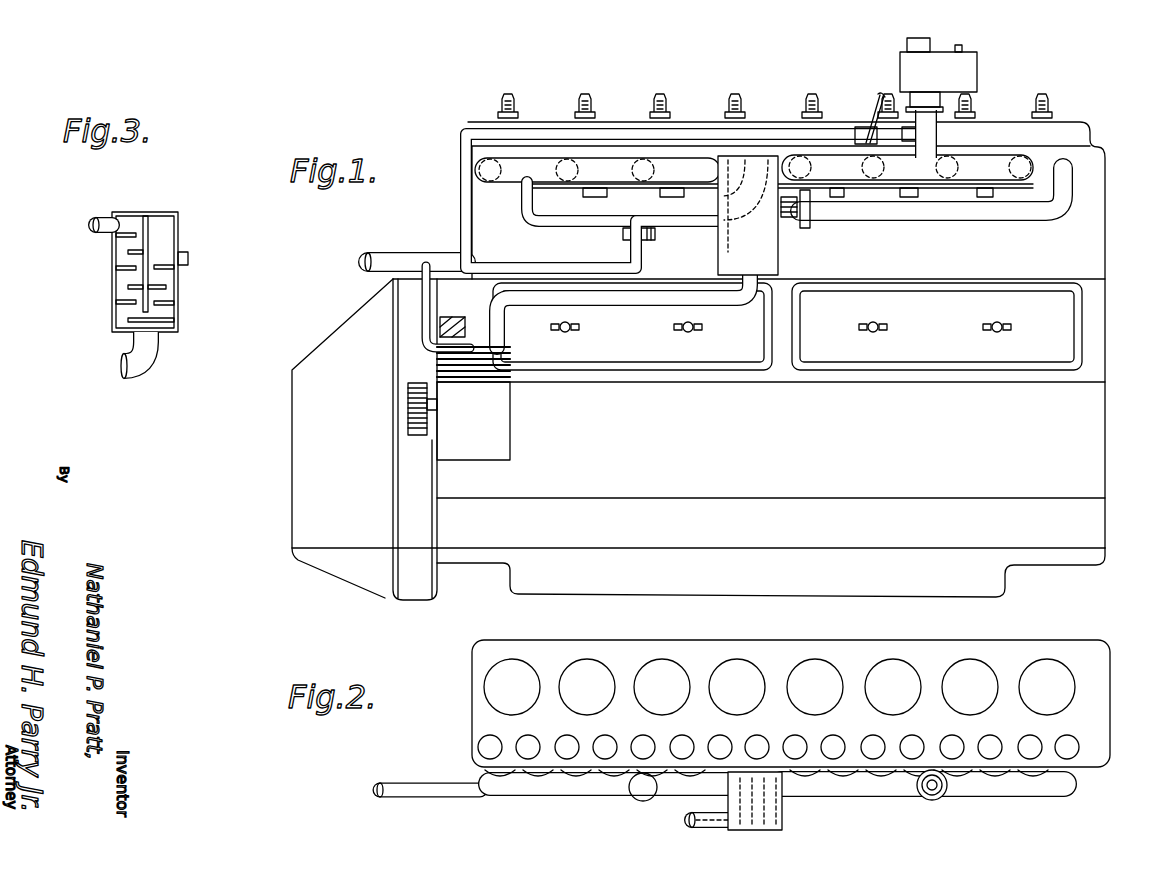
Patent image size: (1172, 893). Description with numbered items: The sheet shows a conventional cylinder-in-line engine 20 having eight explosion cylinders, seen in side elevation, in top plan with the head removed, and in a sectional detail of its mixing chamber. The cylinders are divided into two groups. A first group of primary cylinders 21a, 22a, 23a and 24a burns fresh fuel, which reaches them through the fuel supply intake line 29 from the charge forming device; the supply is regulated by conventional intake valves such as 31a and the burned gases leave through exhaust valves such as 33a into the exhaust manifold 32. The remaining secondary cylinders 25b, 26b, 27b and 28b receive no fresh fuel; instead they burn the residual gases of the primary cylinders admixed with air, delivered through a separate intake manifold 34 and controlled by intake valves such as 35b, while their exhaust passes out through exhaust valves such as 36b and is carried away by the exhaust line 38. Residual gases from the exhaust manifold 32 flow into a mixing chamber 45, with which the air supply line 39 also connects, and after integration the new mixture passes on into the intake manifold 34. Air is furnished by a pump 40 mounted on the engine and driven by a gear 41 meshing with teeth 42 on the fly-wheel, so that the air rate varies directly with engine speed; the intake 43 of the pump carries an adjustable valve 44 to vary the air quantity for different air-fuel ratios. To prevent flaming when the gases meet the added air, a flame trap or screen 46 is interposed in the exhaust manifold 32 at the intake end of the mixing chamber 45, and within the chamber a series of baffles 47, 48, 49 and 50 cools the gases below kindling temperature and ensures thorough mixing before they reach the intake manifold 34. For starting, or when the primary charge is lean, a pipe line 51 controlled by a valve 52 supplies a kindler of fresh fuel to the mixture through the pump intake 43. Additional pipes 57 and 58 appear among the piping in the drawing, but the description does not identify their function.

In FIG. 1, the line type engine 20 is at (1087, 248).
In FIG. 2, the line type engine 20 is at (1098, 652).
In FIG. 2, the primary cylinder 21a is at (1045, 665).
In FIG. 2, the primary cylinder 22a is at (968, 665).
In FIG. 2, the primary cylinder 23a is at (891, 665).
In FIG. 2, the primary cylinder 24a is at (813, 665).
In FIG. 2, the secondary cylinder 25b is at (735, 665).
In FIG. 2, the secondary cylinder 26b is at (660, 665).
In FIG. 2, the secondary cylinder 27b is at (585, 665).
In FIG. 2, the secondary cylinder 28b is at (510, 665).
In FIG. 1, the fuel supply intake line 29 is at (968, 158).
In FIG. 2, the fuel supply intake line 29 is at (940, 800).
In FIG. 2, the intake valve 31a is at (1026, 746).
In FIG. 1, the exhaust manifold 32 is at (935, 212).
In FIG. 2, the exhaust manifold 32 is at (1055, 797).
In FIG. 3, the exhaust manifold 32 is at (190, 262).
In FIG. 2, the exhaust valve 33a is at (1066, 748).
In FIG. 1, the intake manifold 34 is at (612, 158).
In FIG. 2, the intake manifold 34 is at (562, 794).
In FIG. 3, the intake manifold 34 is at (95, 235).
In FIG. 2, the intake valve 35b is at (718, 745).
In FIG. 2, the exhaust valve 36b is at (757, 745).
In FIG. 2, the exhaust line 38 is at (428, 796).
In FIG. 1, the air supply line 39 is at (627, 302).
In FIG. 2, the air supply line 39 is at (688, 822).
In FIG. 3, the air supply line 39 is at (150, 370).
In FIG. 1, the pump 40 is at (492, 408).
In FIG. 1, the gear 41 is at (408, 420).
In FIG. 1, the teeth 42 is at (437, 384).
In FIG. 1, the intake 43 is at (440, 330).
In FIG. 1, the adjustable valve 44 is at (462, 315).
In FIG. 1, the mixing chamber 45 is at (760, 247).
In FIG. 2, the mixing chamber 45 is at (784, 820).
In FIG. 3, the mixing chamber 45 is at (178, 237).
In FIG. 1, the flame trap or screen 46 is at (795, 218).
In FIG. 3, the baffle 47 is at (150, 232).
In FIG. 3, the baffle 48 is at (125, 232).
In FIG. 3, the baffle 49 is at (165, 275).
In FIG. 1, the baffle 50 is at (962, 70).
In FIG. 3, the baffle 50 is at (128, 290).
In FIG. 1, the pipe line 51 is at (776, 127).
In FIG. 1, the valve 52 is at (860, 130).
In FIG. 1, the pipe 57 is at (590, 212).
In FIG. 2, the pipe 57 is at (527, 778).
In FIG. 1, the pipe 58 is at (398, 258).